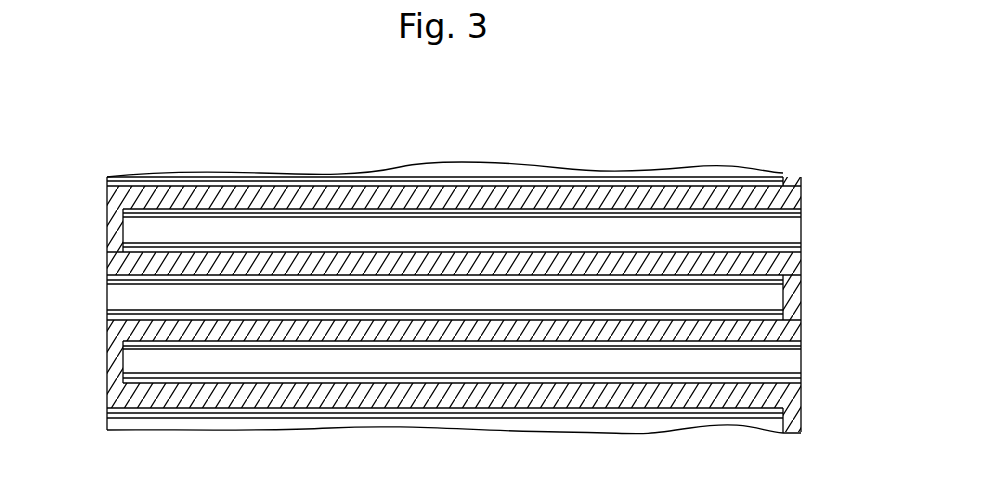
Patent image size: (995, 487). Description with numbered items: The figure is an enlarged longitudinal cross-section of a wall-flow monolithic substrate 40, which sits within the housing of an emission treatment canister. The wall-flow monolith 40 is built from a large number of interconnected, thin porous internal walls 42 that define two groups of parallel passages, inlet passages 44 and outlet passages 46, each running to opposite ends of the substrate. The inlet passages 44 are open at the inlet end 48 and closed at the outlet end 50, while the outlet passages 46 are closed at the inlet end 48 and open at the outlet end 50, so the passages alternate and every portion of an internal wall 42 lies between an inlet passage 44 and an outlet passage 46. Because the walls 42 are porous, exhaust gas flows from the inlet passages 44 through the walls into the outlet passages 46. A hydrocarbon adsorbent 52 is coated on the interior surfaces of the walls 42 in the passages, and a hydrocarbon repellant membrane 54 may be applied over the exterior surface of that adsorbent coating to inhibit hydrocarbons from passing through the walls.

The wall-flow monolithic substrate 40 is at (106, 133).
The internal walls 42 is at (372, 205).
The inlet passages 44 is at (122, 295).
The outlet passages 46 is at (789, 235).
The inlet end 48 is at (107, 229).
The outlet end 50 is at (802, 302).
The hydrocarbon adsorbent 52 is at (571, 383).
The hydrocarbon repellant membrane 54 is at (644, 377).